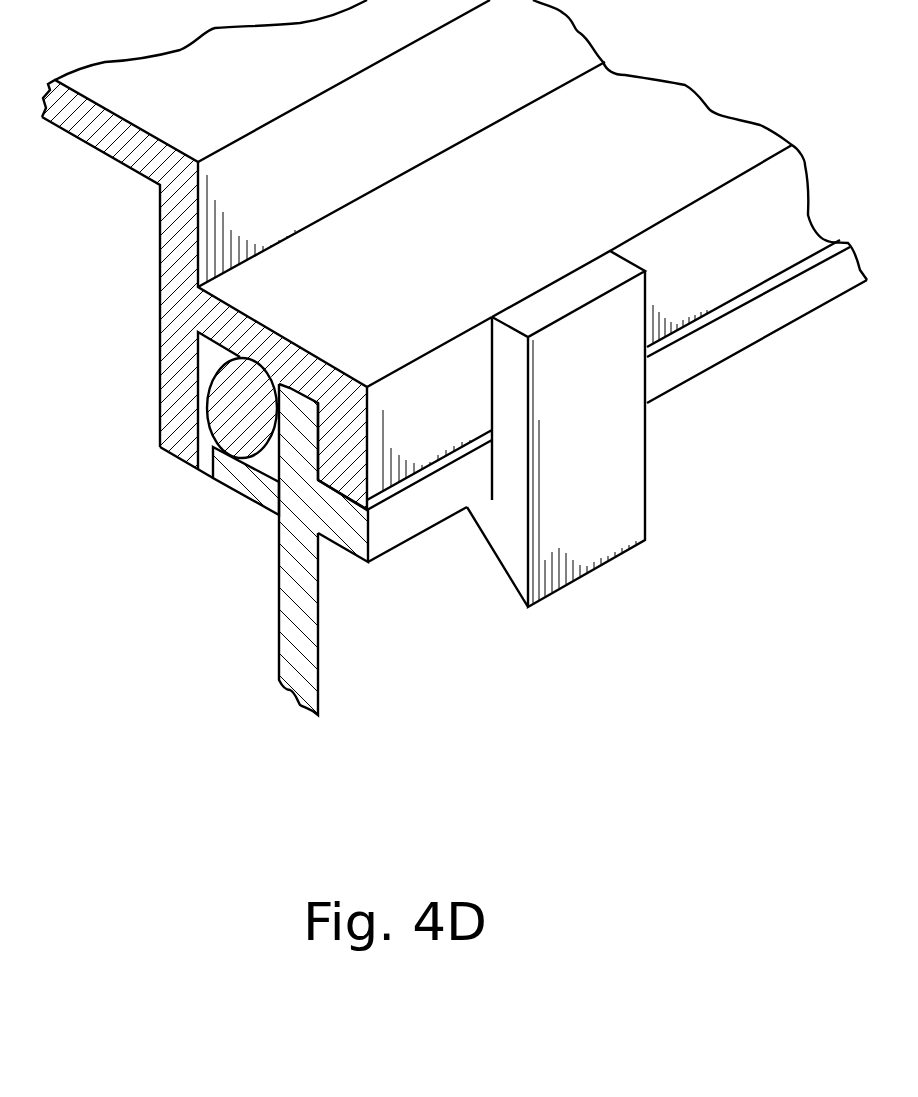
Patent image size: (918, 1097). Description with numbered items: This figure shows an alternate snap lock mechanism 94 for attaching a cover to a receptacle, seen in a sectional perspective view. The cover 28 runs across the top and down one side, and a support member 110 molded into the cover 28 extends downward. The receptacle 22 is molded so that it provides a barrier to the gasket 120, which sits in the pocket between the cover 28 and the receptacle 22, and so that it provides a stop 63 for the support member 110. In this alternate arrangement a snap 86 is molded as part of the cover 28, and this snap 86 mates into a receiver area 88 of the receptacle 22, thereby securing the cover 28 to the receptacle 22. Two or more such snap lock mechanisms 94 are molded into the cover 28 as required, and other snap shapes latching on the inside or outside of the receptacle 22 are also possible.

The cover 28 is at (178, 311).
The gasket 120 is at (230, 398).
The support member 110 is at (177, 455).
The stop 63 is at (227, 482).
The receptacle 22 is at (295, 625).
The receiver area 88 is at (465, 510).
The snap lock mechanism 94 is at (434, 588).
The snap 86 is at (510, 545).